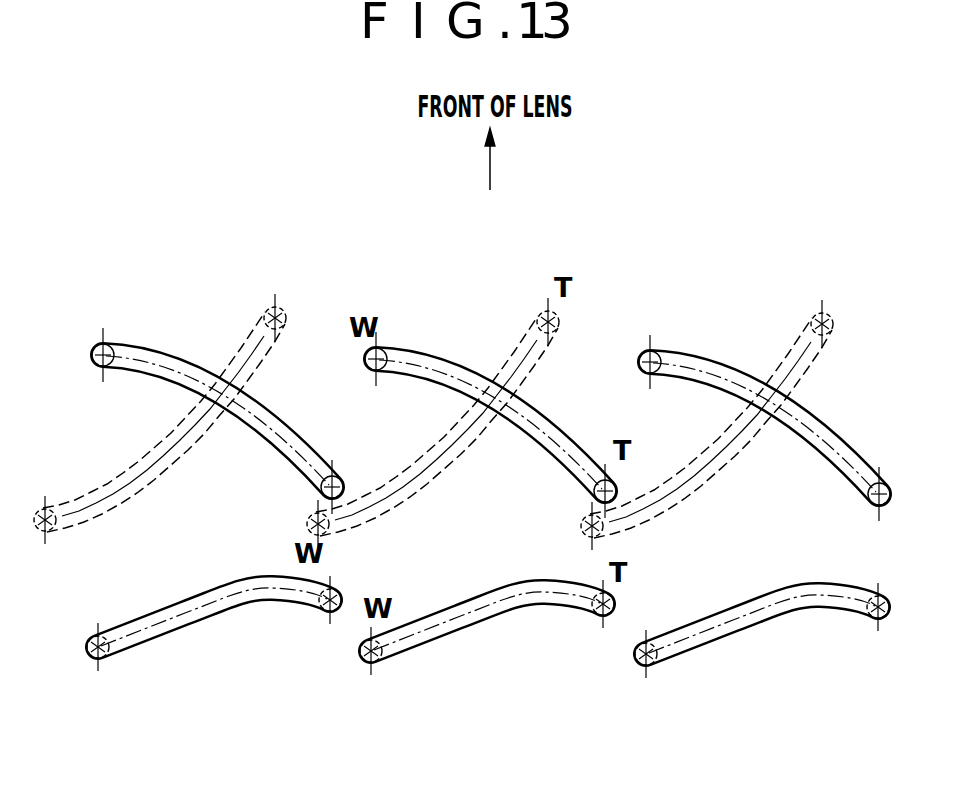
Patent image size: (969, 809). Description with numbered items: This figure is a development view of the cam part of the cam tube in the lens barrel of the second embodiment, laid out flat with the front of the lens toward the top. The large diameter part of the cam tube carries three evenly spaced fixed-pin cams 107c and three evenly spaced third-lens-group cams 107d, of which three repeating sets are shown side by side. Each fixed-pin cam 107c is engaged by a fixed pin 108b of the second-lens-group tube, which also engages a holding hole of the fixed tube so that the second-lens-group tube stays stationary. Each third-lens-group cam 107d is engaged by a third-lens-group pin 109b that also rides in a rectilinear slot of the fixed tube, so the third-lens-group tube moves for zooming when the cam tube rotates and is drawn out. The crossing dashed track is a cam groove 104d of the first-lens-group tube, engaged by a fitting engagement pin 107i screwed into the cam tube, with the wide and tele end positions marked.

The fixed-pin cam 107c is at (465, 362).
The fixed pin 108b is at (384, 354).
The cam groove 104d is at (473, 433).
The fitting engagement pin 107i is at (572, 324).
The third-lens-group cam 107d is at (496, 622).
The third-lens-group pin 109b is at (362, 662).